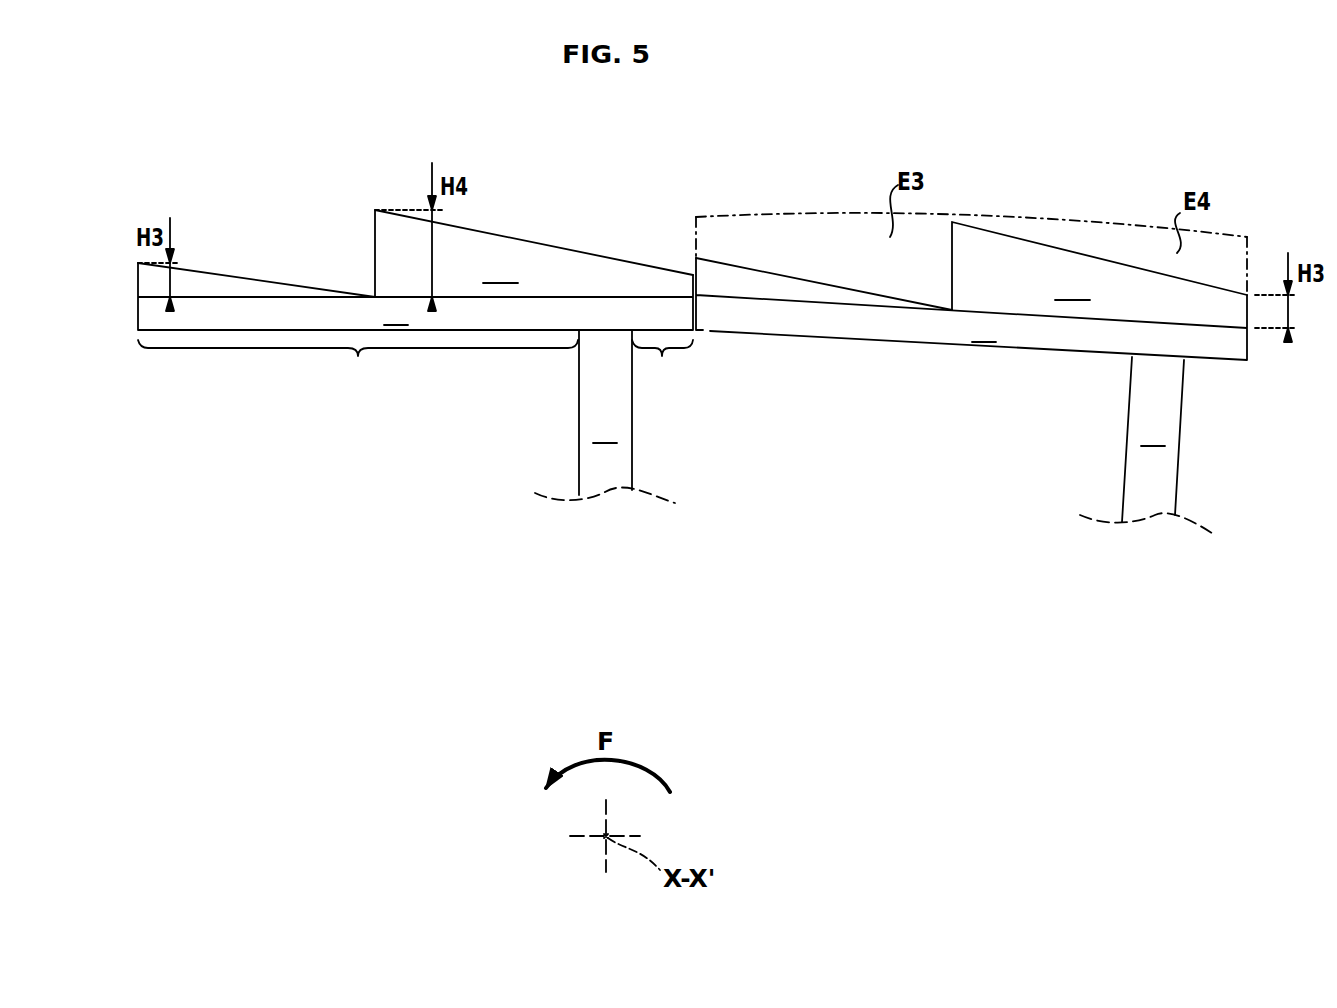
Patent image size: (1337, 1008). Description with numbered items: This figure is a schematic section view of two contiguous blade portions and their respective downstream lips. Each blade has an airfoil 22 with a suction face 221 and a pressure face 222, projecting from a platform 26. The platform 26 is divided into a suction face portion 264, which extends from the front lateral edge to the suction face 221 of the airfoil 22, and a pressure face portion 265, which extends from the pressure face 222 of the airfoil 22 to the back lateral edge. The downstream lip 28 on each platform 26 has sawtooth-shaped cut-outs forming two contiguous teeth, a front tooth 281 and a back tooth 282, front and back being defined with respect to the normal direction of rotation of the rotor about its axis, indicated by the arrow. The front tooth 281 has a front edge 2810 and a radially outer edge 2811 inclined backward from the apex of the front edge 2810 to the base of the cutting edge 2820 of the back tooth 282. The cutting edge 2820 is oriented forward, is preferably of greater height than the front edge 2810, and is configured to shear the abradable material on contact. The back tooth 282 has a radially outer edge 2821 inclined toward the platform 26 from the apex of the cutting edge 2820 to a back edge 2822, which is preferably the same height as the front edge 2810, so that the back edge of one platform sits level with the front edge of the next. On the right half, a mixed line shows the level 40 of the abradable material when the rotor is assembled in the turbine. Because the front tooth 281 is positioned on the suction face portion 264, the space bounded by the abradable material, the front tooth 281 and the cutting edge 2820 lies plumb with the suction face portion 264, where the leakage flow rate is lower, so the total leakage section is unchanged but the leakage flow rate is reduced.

The airfoil 22 is at (878, 432).
The suction face 221 is at (577, 425).
The pressure face 222 is at (635, 425).
The platform 26 is at (137, 318).
The suction face portion 264 is at (358, 367).
The pressure face portion 265 is at (662, 367).
The downstream lip 28 is at (680, 265).
The front tooth 281 is at (197, 290).
The back tooth 282 is at (811, 260).
The front edge 2810 is at (136, 282).
The radially outer edge 2811 is at (268, 277).
The cutting edge 2820 is at (370, 248).
The radially outer edge 2821 is at (528, 238).
The back edge 2822 is at (699, 284).
The level of the abradable material 40 is at (852, 208).